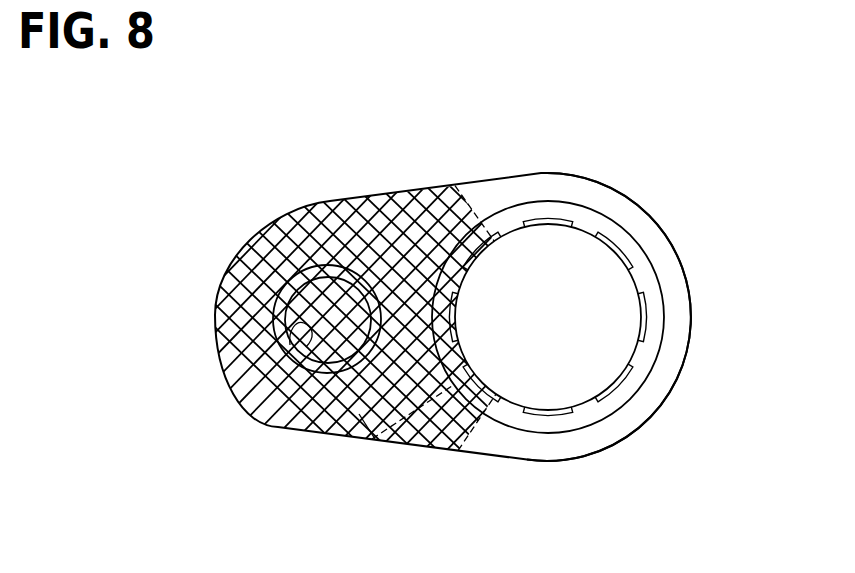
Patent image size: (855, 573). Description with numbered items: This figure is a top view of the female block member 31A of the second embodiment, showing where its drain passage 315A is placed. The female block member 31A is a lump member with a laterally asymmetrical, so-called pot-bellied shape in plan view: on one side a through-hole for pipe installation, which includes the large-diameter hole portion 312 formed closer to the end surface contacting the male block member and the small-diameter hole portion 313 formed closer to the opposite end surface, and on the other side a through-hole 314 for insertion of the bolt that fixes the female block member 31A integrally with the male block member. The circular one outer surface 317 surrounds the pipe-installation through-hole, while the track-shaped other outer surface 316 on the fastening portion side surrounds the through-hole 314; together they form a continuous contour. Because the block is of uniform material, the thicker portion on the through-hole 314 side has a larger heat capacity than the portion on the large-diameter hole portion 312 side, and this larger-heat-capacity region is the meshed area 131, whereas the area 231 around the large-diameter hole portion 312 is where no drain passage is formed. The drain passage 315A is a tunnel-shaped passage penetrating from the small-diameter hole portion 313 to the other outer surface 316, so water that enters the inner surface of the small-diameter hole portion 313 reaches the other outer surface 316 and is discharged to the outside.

The female block member 31A is at (220, 275).
The area larger in heat capacity 131 is at (366, 233).
The area around the hole portion 231 is at (648, 236).
The large-diameter hole portion 312 is at (659, 276).
The small-diameter hole portion 313 is at (641, 285).
The through-hole 314 is at (253, 401).
The drain passage 315A is at (363, 441).
The other outer surface 316 is at (411, 449).
The one outer surface 317 is at (690, 359).